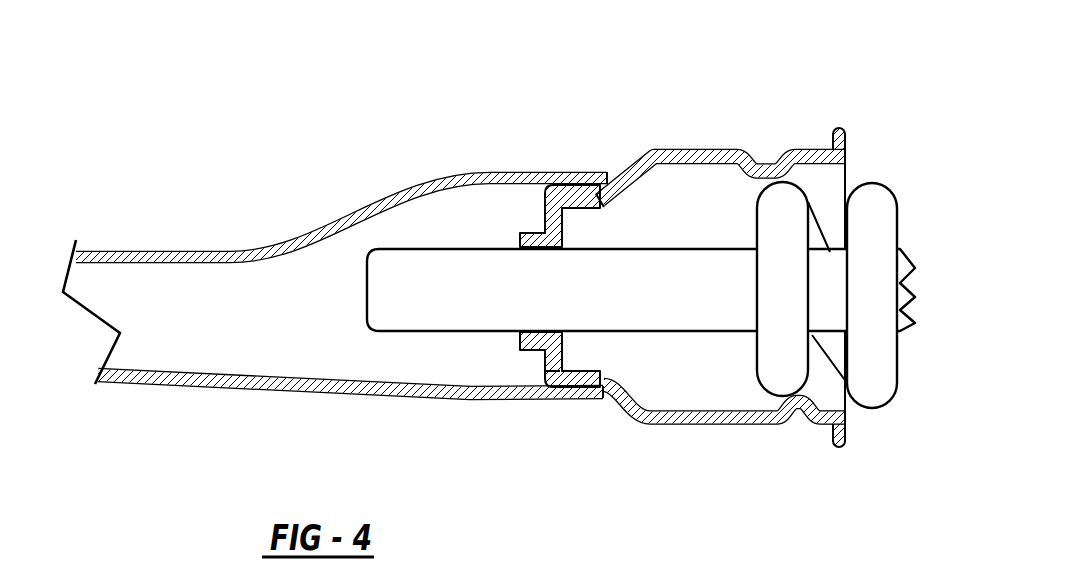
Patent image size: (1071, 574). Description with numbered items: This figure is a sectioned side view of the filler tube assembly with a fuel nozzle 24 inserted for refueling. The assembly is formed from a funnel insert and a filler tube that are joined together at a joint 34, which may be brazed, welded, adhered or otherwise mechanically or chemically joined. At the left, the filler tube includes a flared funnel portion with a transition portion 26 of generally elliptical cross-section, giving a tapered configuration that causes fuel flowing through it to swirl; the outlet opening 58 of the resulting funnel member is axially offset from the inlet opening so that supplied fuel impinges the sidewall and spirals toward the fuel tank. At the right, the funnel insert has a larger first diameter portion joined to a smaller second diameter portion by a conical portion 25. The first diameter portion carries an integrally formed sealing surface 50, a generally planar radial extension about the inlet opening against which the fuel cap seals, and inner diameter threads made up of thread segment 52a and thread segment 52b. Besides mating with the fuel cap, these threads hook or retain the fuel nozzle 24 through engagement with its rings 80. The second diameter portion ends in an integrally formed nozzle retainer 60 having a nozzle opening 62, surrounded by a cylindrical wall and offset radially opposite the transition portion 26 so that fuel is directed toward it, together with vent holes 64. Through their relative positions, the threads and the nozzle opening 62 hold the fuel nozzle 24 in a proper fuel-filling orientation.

The fuel nozzle 24 is at (730, 337).
The conical portion 25 is at (636, 155).
The transition portion 26 is at (318, 224).
The joint 34 is at (610, 402).
The sealing surface 50 is at (841, 132).
The thread segment 52a is at (798, 410).
The thread segment 52b is at (773, 152).
The outlet opening 58 is at (155, 357).
The nozzle retainer 60 is at (541, 371).
The nozzle opening 62 is at (555, 335).
The vent holes 64 is at (562, 221).
The rings 80 is at (777, 220).